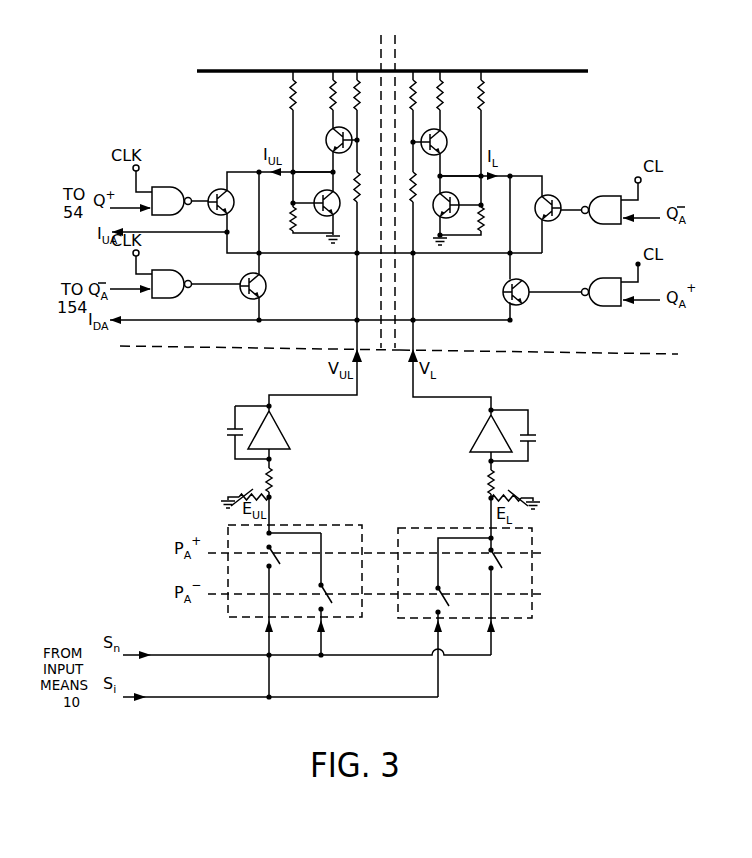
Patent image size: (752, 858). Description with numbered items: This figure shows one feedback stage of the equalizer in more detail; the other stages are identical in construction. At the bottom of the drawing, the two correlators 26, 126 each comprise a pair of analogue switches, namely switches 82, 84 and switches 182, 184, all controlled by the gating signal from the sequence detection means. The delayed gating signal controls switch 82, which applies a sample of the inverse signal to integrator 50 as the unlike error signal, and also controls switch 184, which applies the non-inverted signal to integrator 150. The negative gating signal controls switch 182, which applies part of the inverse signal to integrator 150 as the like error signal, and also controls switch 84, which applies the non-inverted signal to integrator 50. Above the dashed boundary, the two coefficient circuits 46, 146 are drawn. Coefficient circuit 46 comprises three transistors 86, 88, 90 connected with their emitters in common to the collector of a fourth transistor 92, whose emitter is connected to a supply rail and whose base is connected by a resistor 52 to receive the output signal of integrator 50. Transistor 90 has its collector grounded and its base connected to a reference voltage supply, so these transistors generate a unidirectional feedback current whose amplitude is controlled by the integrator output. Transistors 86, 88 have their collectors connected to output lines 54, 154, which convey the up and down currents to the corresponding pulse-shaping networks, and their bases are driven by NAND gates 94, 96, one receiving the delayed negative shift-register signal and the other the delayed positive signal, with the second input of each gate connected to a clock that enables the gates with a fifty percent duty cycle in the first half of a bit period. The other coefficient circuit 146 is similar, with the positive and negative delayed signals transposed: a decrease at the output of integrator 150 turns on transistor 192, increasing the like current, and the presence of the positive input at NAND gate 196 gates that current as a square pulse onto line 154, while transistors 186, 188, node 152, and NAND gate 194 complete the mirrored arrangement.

The correlator 26 is at (312, 523).
The coefficient circuit 46 is at (167, 349).
The integrator 50 is at (243, 395).
The resistor 52 is at (333, 172).
The output line 54 is at (238, 494).
The analogue switch 82 is at (281, 558).
The analogue switch 84 is at (329, 593).
The transistor 86 is at (222, 190).
The transistor 88 is at (263, 279).
The transistor 90 is at (333, 211).
The fourth transistor 92 is at (331, 129).
The NAND gate 94 is at (172, 187).
The NAND gate 96 is at (173, 270).
The correlator 126 is at (460, 526).
The coefficient circuit 146 is at (600, 356).
The integrator 150 is at (528, 398).
The junction node 152 is at (424, 178).
The output line 154 is at (523, 496).
The analogue switch 182 is at (445, 590).
The analogue switch 184 is at (497, 562).
The transistor 186 is at (548, 195).
The transistor 188 is at (504, 282).
The transistor 192 is at (438, 130).
The NAND gate 194 is at (595, 196).
The NAND gate 196 is at (600, 278).